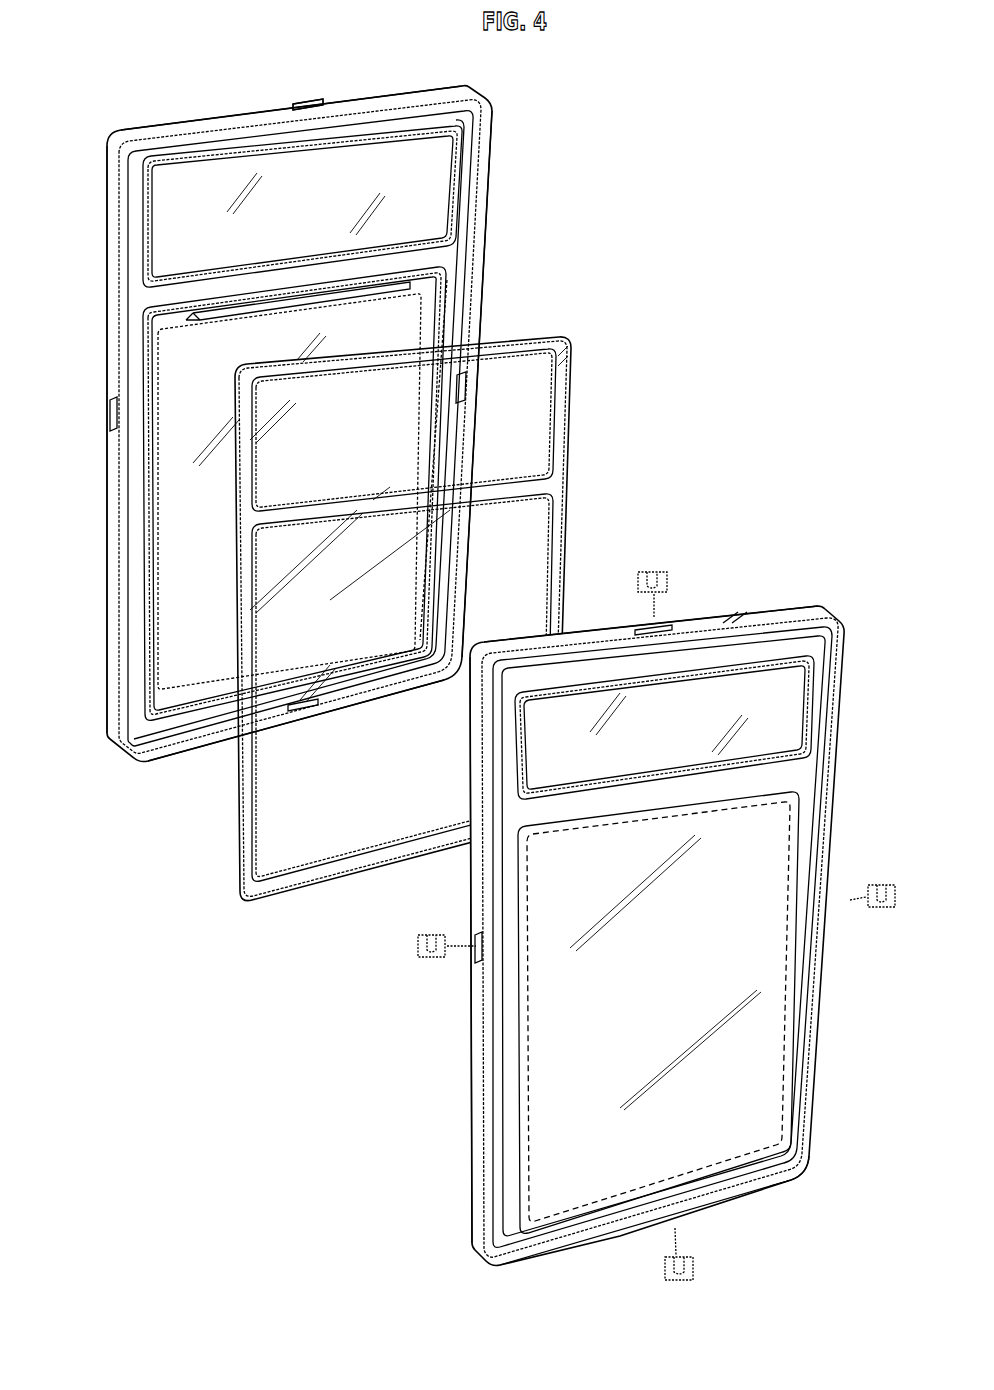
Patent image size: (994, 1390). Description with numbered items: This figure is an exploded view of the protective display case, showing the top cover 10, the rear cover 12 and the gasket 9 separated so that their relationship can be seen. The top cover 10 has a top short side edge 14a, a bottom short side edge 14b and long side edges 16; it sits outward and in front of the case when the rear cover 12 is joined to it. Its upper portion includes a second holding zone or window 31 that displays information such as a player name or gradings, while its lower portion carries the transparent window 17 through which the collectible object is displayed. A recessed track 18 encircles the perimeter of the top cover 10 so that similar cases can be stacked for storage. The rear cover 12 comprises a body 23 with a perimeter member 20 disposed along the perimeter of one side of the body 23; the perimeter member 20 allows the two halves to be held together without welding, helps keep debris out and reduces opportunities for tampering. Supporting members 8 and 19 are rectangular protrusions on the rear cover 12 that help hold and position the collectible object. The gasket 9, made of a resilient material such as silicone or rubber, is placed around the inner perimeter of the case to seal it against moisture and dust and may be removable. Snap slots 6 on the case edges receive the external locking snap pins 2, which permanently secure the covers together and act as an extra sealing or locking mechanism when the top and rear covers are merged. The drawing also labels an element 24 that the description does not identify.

The snap pins 2 is at (653, 568).
The snap slots 6 is at (303, 101).
The supporting members 8 is at (437, 430).
The gasket 9 is at (571, 388).
The top cover 10 is at (858, 598).
The rear cover 12 is at (93, 122).
The top short side edge 14a is at (202, 114).
The bottom short side edge 14b is at (375, 700).
The long side edges 16 is at (113, 325).
The transparent window 17 is at (757, 1050).
The recessed track 18 is at (803, 1176).
The supporting member 19 is at (147, 202).
The perimeter member 20 is at (445, 278).
The body 23 is at (495, 160).
The panel 24 is at (215, 508).
The second holding zone 31 is at (768, 722).